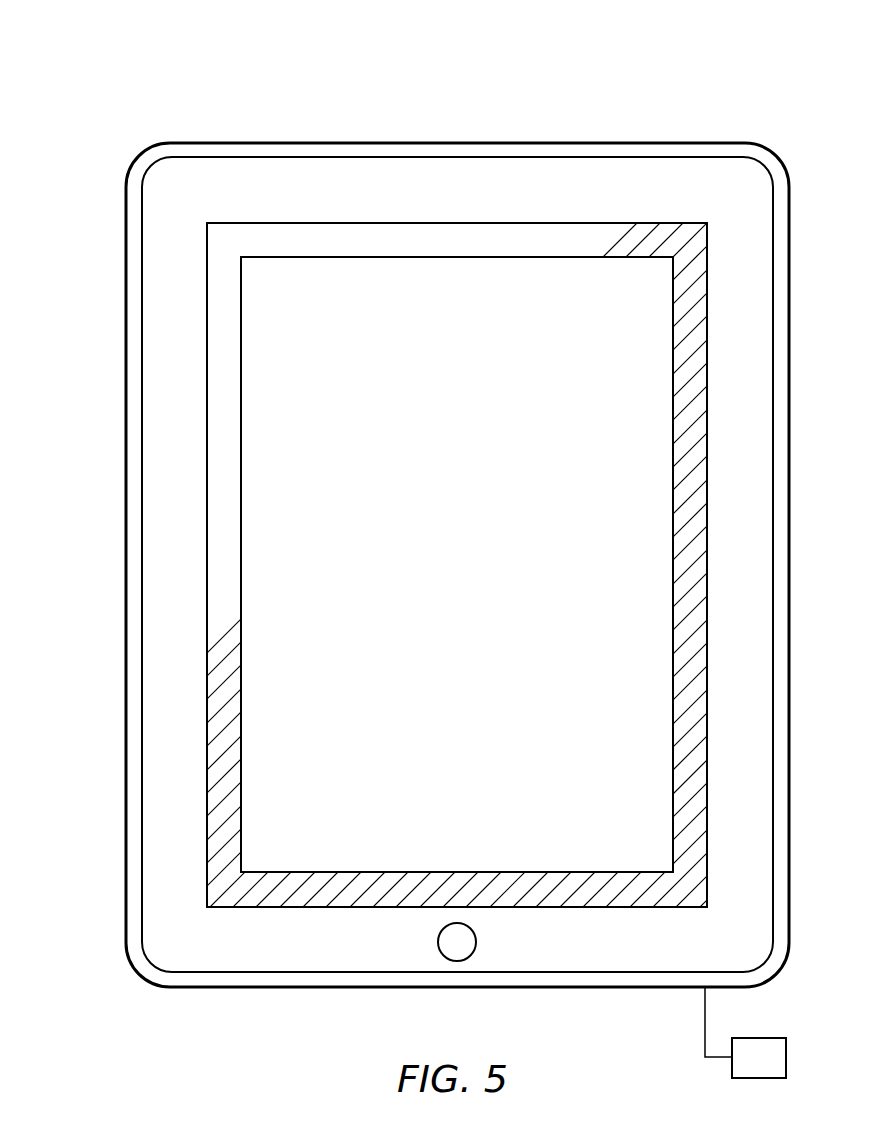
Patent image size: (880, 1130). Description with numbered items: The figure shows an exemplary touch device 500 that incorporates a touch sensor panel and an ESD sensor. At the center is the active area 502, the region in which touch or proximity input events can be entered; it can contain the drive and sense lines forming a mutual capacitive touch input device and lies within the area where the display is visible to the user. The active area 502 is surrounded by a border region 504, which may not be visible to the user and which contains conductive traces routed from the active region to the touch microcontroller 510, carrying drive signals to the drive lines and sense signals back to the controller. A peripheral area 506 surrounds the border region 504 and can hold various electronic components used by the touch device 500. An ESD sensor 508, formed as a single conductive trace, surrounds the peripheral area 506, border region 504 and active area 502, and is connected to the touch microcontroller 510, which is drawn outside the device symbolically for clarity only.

The touch device 500 is at (781, 112).
The active area 502 is at (647, 565).
The border region 504 is at (225, 884).
The peripheral area 506 is at (320, 938).
The ESD sensor 508 is at (138, 973).
The touch microcontroller 510 is at (745, 1032).